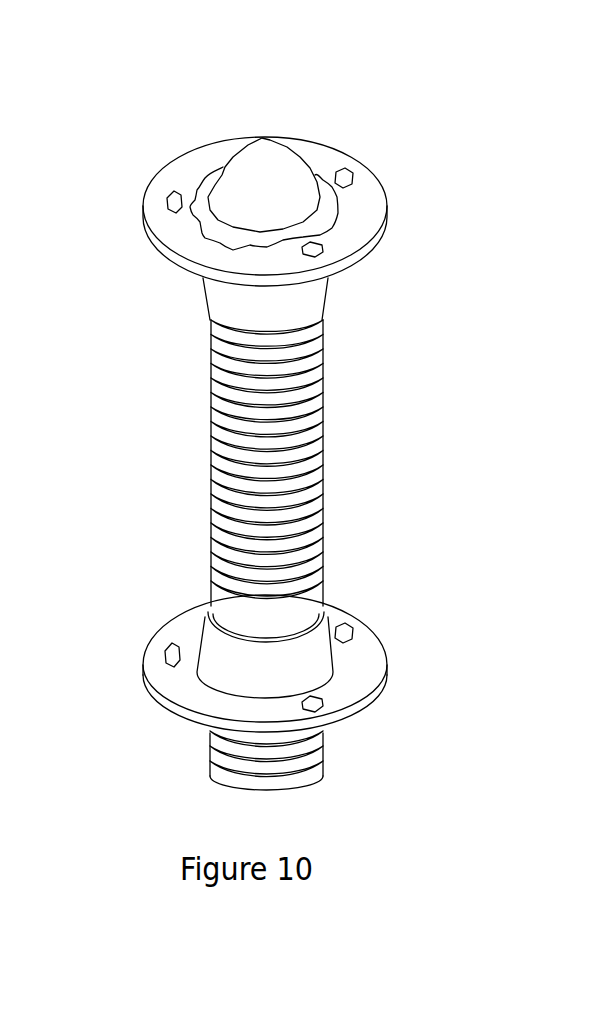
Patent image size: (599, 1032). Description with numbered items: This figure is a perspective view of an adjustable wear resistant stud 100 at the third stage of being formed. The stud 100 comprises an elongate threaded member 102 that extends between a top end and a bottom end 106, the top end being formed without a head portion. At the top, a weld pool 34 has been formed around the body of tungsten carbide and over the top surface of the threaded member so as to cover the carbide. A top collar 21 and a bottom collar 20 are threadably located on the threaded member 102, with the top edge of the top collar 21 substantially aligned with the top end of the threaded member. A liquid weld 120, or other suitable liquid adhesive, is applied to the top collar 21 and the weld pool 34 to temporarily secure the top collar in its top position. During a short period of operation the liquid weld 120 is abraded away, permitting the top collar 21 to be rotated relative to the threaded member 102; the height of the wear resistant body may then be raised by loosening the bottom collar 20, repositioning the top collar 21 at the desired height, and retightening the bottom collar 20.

The adjustable wear resistant stud 100 is at (291, 66).
The elongate threaded member 102 is at (324, 424).
The top collar 21 is at (387, 199).
The bottom collar 20 is at (387, 675).
The weld pool 34 is at (307, 157).
The liquid weld 120 is at (201, 204).
The bottom end 106 is at (212, 765).